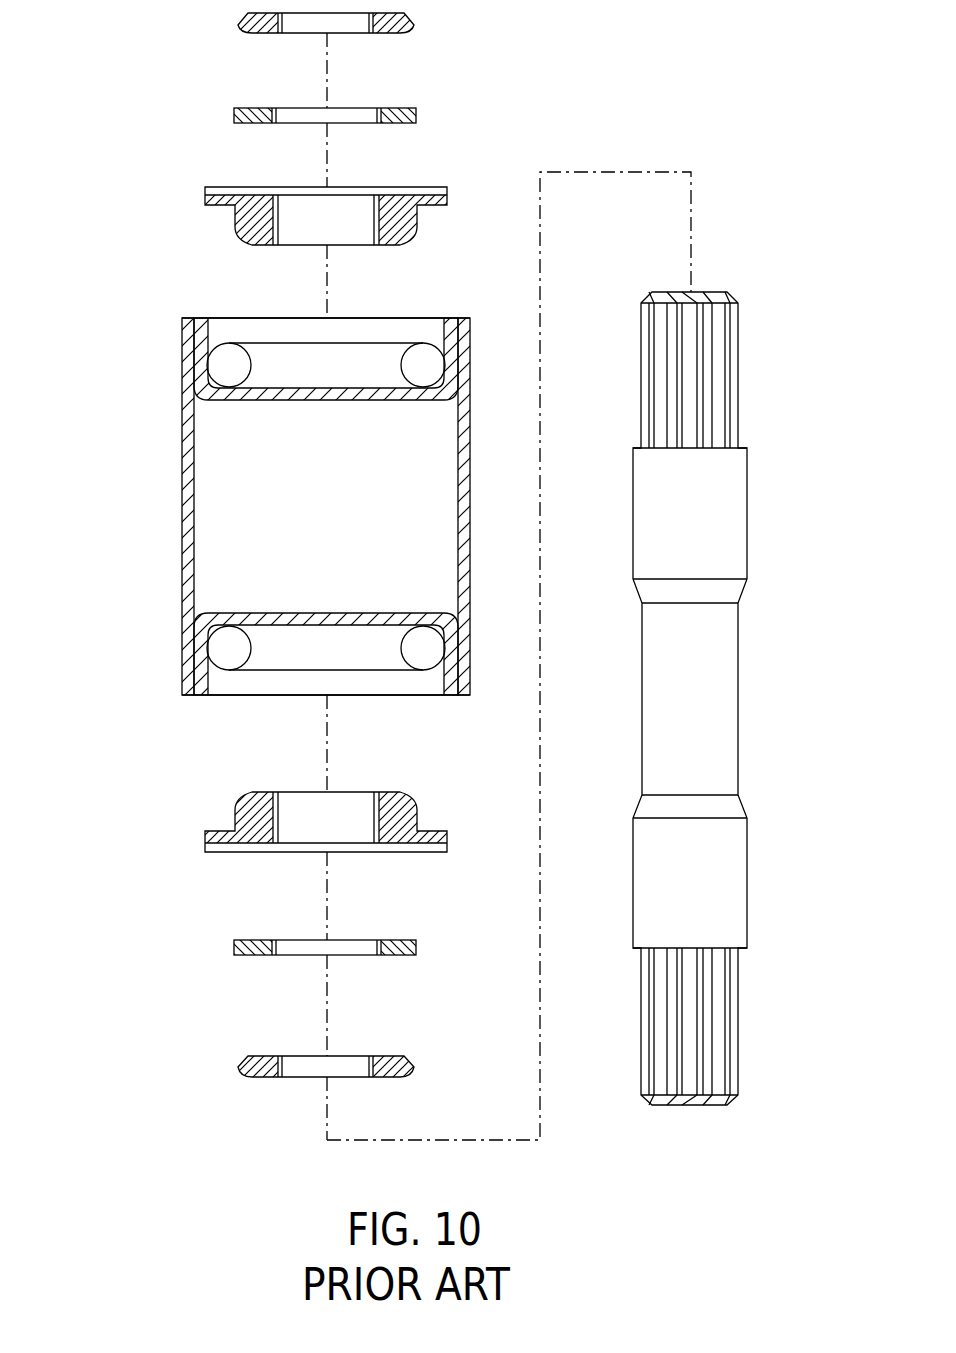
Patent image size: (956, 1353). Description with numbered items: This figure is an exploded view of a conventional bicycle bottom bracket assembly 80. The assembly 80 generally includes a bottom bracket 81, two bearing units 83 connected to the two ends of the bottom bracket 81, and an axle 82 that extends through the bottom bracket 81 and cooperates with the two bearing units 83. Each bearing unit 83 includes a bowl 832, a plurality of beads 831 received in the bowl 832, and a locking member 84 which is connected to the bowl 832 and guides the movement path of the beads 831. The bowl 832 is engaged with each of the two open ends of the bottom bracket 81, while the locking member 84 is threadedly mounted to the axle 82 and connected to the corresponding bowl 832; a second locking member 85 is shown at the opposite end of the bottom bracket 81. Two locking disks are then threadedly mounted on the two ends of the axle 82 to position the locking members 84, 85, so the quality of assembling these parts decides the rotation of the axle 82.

The bottom bracket assembly 80 is at (725, 172).
The bottom bracket 81 is at (182, 473).
The axle 82 is at (747, 515).
The bearing unit 83 is at (257, 506).
The beads 831 is at (225, 367).
The bowl 832 is at (200, 340).
The locking member 84 is at (205, 202).
The lower flanged bushing 85 is at (205, 848).